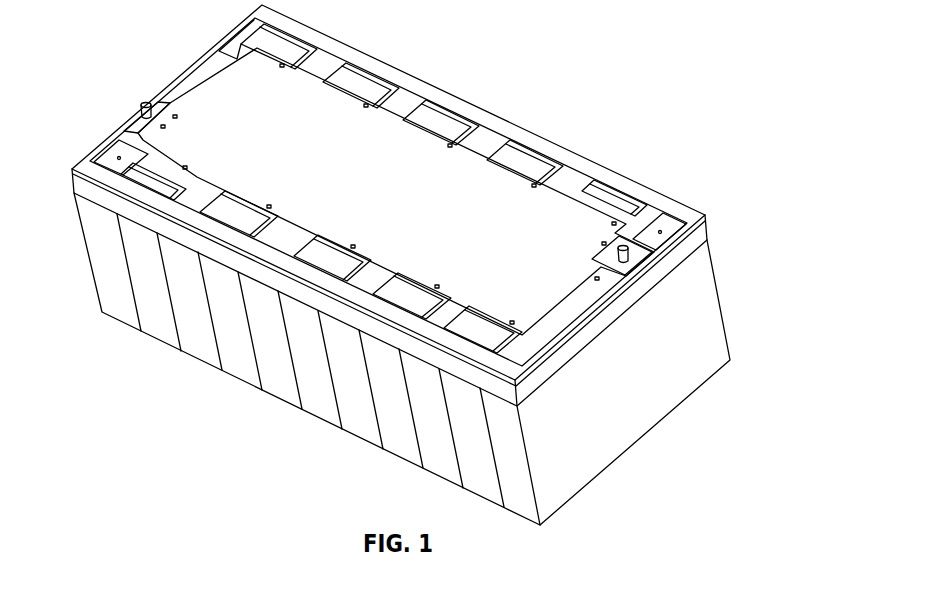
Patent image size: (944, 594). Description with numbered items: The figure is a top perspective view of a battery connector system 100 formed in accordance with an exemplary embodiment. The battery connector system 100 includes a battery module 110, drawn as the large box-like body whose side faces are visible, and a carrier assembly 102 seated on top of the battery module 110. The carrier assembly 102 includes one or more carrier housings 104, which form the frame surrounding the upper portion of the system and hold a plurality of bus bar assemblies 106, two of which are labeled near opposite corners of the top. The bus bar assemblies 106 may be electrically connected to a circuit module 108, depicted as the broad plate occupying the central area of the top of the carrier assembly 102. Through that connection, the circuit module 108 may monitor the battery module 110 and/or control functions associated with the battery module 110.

The battery connector system 100 is at (463, 39).
The carrier assembly 102 is at (590, 150).
The carrier housing 104 is at (696, 237).
The bus bar assembly 106 is at (627, 206).
The circuit module 108 is at (490, 173).
The battery module 110 is at (722, 280).